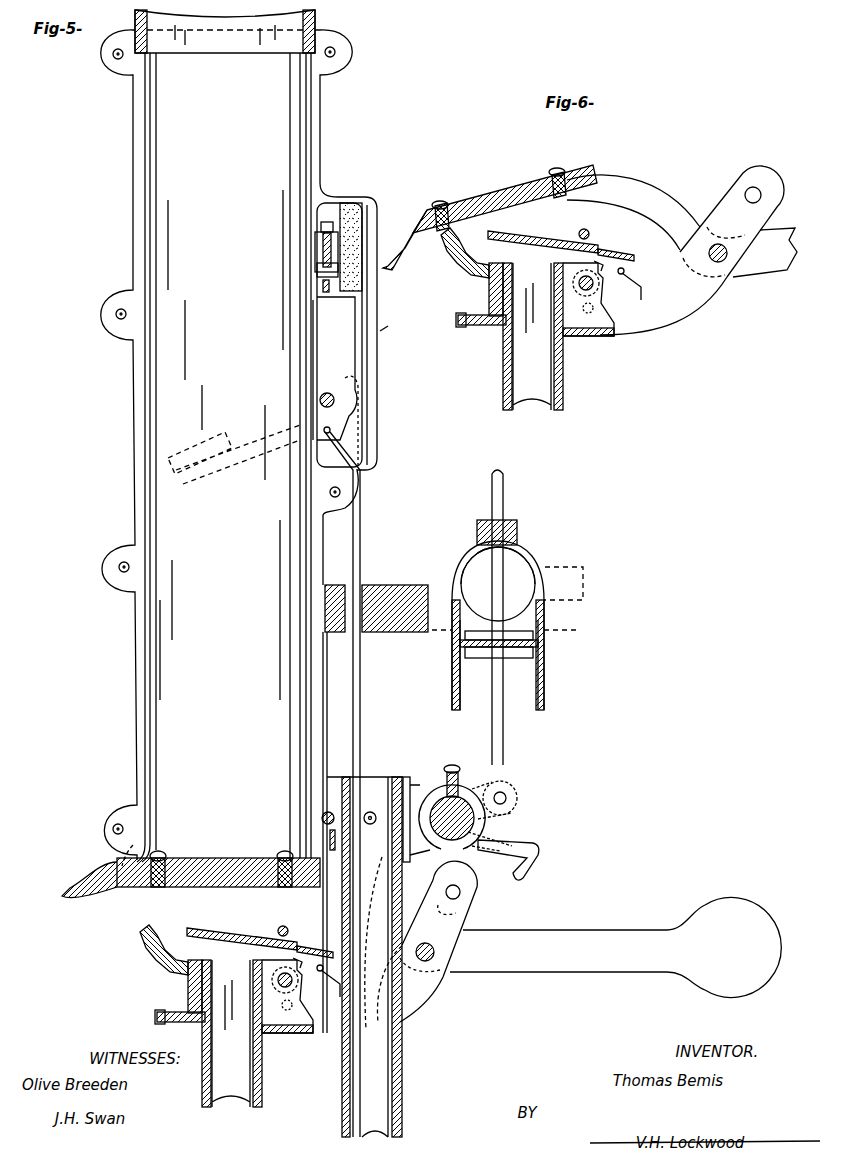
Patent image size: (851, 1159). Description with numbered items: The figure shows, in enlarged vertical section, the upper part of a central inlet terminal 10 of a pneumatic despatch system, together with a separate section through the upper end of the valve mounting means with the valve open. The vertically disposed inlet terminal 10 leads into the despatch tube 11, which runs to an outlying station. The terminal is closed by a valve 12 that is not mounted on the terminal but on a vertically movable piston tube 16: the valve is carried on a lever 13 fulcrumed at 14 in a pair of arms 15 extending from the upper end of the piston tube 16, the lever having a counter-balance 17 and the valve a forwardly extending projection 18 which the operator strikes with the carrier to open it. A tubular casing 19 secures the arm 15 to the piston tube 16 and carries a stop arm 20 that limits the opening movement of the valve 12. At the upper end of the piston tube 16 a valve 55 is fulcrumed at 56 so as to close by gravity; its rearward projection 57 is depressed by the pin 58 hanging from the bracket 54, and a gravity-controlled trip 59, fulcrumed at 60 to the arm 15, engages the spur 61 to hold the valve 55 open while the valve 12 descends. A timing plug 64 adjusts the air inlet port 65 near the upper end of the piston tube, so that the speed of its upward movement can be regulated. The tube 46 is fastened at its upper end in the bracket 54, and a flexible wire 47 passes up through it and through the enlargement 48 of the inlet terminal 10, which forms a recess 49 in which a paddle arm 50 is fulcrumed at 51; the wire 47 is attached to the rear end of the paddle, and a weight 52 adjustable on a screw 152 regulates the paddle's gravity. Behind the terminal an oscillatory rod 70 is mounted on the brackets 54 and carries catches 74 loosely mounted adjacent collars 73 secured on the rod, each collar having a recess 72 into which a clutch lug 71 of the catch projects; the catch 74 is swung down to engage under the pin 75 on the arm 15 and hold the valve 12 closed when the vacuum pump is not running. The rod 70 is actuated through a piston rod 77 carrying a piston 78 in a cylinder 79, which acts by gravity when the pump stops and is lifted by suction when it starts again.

In FIG. 5, the central inlet terminal 10 is at (133, 214).
In FIG. 5, the despatch tube 11 is at (318, 28).
In FIG. 5, the valve 12 is at (233, 887).
In FIG. 6, the valve 12 is at (495, 200).
In FIG. 5, the lever 13 is at (401, 905).
In FIG. 6, the lever 13 is at (643, 187).
In FIG. 5, the fulcrum 14 is at (432, 961).
In FIG. 6, the fulcrum 14 is at (722, 262).
In FIG. 5, the arms 15 is at (468, 921).
In FIG. 6, the arms 15 is at (726, 205).
In FIG. 5, the piston tube 16 is at (262, 1092).
In FIG. 6, the piston tube 16 is at (545, 336).
In FIG. 5, the counter-balance 17 is at (615, 948).
In FIG. 6, the counter-balance 17 is at (782, 236).
In FIG. 5, the projection 18 is at (70, 890).
In FIG. 6, the projection 18 is at (400, 263).
In FIG. 5, the tubular casing 19 is at (188, 990).
In FIG. 6, the tubular casing 19 is at (475, 289).
In FIG. 5, the stop arm 20 is at (146, 928).
In FIG. 6, the stop arm 20 is at (452, 253).
In FIG. 5, the tube 46 is at (402, 1063).
In FIG. 5, the flexible wire 47 is at (359, 545).
In FIG. 5, the enlargement 48 is at (378, 325).
In FIG. 6, the enlargement 48 is at (381, 330).
In FIG. 5, the recess 49 is at (337, 382).
In FIG. 5, the paddle arm 50 is at (314, 342).
In FIG. 5, the fulcrum 51 is at (329, 393).
In FIG. 5, the weight 52 is at (317, 270).
In FIG. 5, the bracket 54 is at (392, 585).
In FIG. 5, the valve 55 is at (248, 934).
In FIG. 6, the valve 55 is at (543, 233).
In FIG. 5, the fulcrum 56 is at (283, 925).
In FIG. 6, the fulcrum 56 is at (598, 222).
In FIG. 5, the projection 57 is at (318, 947).
In FIG. 6, the projection 57 is at (623, 246).
In FIG. 5, the pin 58 is at (355, 204).
In FIG. 5, the trip 59 is at (301, 999).
In FIG. 6, the trip 59 is at (605, 302).
In FIG. 5, the fulcrum 60 is at (289, 988).
In FIG. 6, the fulcrum 60 is at (597, 291).
In FIG. 5, the spur 61 is at (300, 965).
In FIG. 6, the spur 61 is at (588, 293).
In FIG. 5, the timing plug 64 is at (162, 1022).
In FIG. 6, the timing plug 64 is at (472, 331).
In FIG. 5, the air inlet port 65 is at (190, 1026).
In FIG. 6, the air inlet port 65 is at (473, 334).
In FIG. 5, the oscillatory rod 70 is at (458, 800).
In FIG. 5, the clutch lug 71 is at (461, 849).
In FIG. 5, the recess 72 is at (441, 849).
In FIG. 5, the collar 73 is at (446, 786).
In FIG. 5, the catch 74 is at (534, 846).
In FIG. 5, the pin 75 is at (461, 892).
In FIG. 6, the pin 75 is at (755, 188).
In FIG. 5, the piston rod 77 is at (505, 729).
In FIG. 5, the piston 78 is at (540, 636).
In FIG. 5, the cylinder 79 is at (538, 556).
In FIG. 5, the screw 152 is at (320, 247).